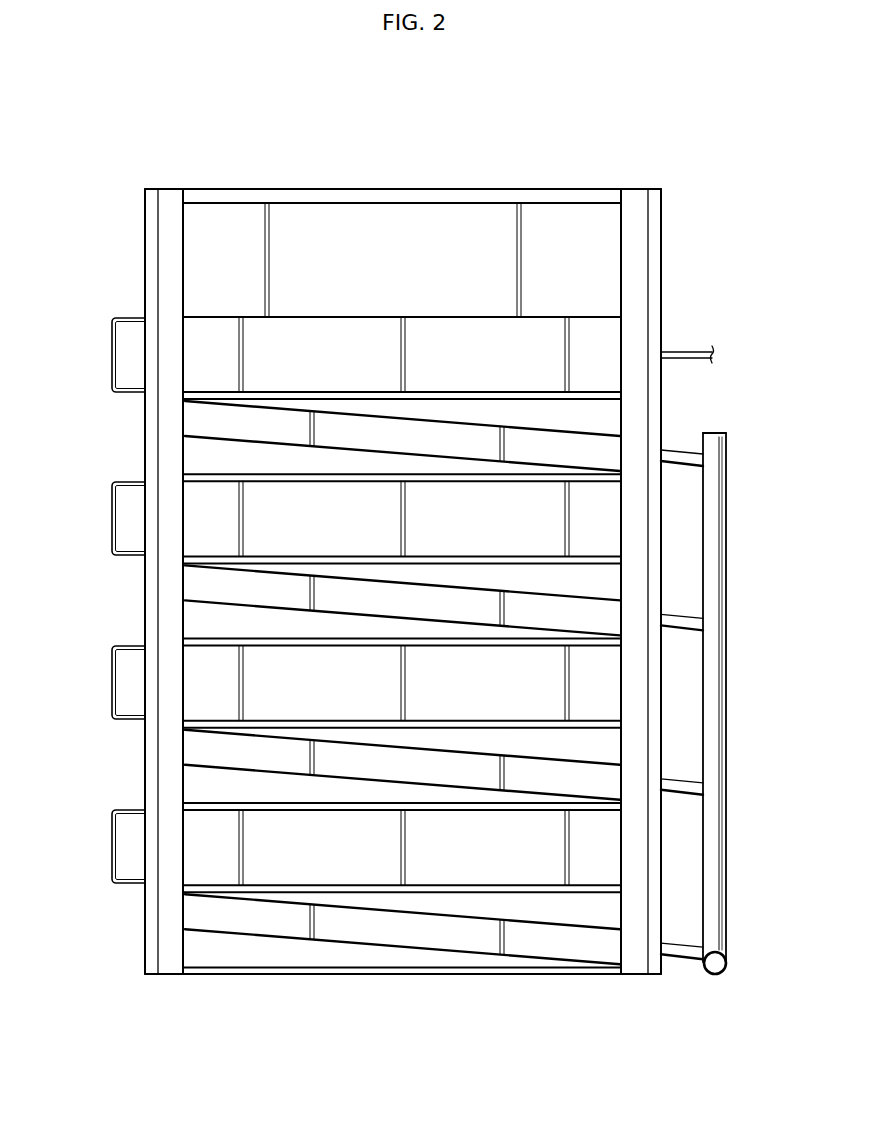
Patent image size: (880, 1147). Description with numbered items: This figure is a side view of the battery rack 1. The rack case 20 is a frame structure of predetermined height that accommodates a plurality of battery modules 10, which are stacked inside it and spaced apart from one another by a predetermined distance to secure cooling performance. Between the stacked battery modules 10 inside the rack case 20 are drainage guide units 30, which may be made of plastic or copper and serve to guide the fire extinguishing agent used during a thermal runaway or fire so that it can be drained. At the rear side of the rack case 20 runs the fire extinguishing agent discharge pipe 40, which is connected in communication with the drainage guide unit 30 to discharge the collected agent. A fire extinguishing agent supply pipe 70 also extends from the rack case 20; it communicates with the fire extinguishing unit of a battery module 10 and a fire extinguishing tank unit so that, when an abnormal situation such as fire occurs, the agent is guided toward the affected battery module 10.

The battery rack 1 is at (172, 142).
The battery module 10 is at (107, 518).
The rack case 20 is at (145, 231).
The drainage guide unit 30 is at (186, 588).
The fire extinguishing agent discharge pipe 40 is at (727, 503).
The fire extinguishing agent supply pipe 70 is at (688, 351).